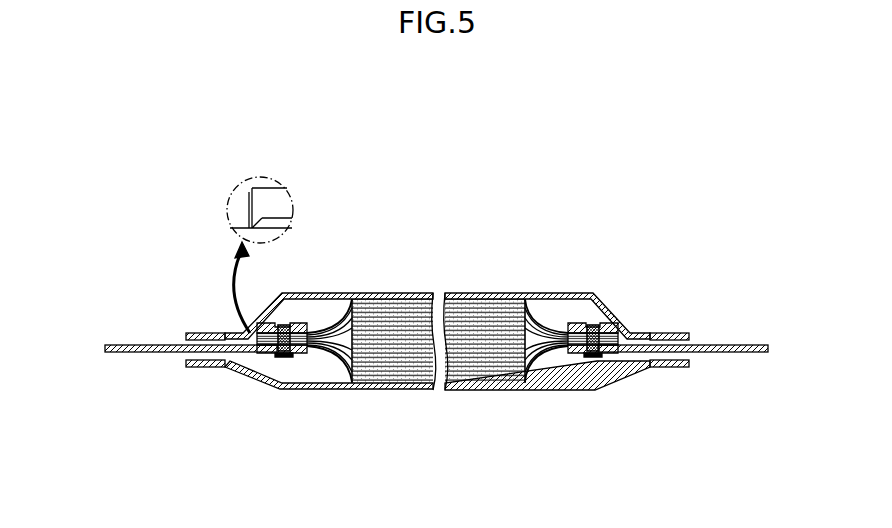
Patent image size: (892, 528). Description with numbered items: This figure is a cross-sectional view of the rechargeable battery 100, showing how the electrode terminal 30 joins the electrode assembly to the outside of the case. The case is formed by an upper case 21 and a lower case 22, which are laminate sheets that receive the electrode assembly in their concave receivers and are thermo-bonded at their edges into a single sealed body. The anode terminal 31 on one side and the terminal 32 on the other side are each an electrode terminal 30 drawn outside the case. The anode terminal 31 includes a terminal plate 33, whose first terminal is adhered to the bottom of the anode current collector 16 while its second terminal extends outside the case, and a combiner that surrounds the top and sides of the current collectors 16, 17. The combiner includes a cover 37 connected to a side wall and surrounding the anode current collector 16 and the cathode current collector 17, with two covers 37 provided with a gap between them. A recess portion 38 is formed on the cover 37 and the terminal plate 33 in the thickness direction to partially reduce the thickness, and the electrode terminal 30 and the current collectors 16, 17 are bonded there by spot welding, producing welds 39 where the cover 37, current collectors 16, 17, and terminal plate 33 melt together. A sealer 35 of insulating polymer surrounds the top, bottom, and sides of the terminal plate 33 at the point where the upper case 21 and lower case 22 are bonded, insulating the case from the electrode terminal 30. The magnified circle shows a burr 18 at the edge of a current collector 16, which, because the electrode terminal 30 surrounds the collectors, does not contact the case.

The rechargeable battery 100 is at (427, 135).
The anode current collector 16 is at (280, 200).
The cathode current collector 17 is at (615, 374).
The burr 18 is at (250, 222).
The upper case 21 is at (389, 293).
The lower case 22 is at (376, 390).
The electrode terminal 30 is at (443, 346).
The anode terminal 31 is at (433, 348).
The second cable 32 is at (745, 340).
The terminal plate 33 is at (128, 354).
The sealer 35 is at (190, 368).
The cover 37 is at (301, 322).
The recess portion 38 is at (284, 322).
The weld 39 is at (272, 358).